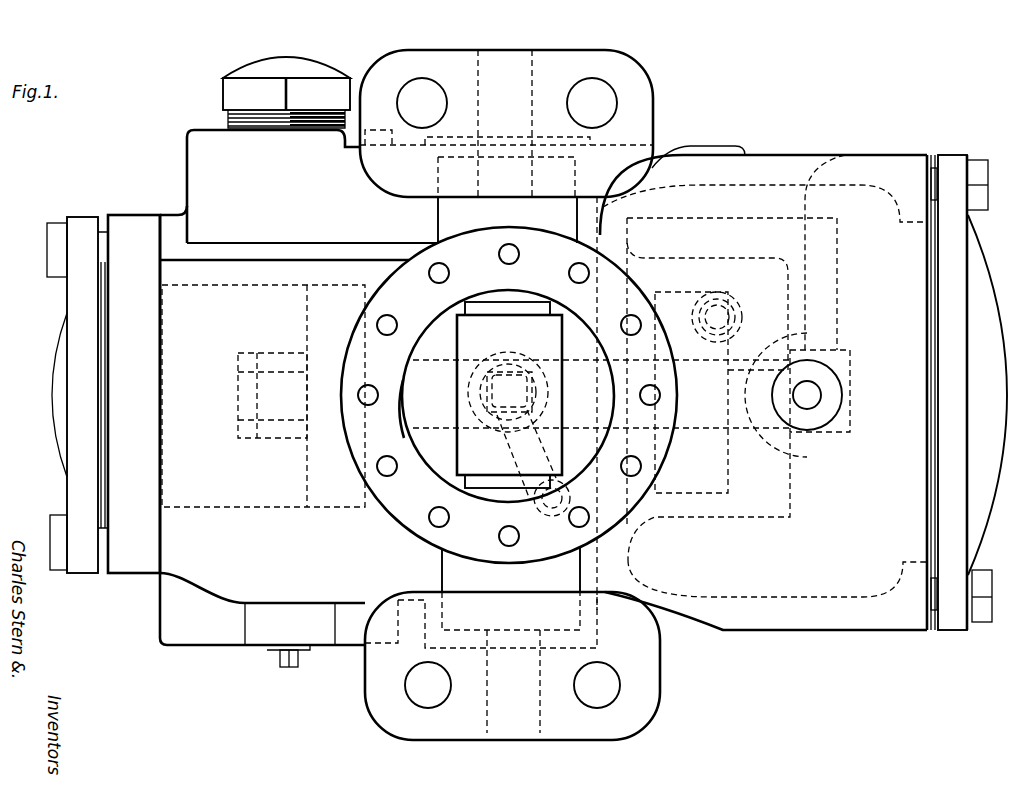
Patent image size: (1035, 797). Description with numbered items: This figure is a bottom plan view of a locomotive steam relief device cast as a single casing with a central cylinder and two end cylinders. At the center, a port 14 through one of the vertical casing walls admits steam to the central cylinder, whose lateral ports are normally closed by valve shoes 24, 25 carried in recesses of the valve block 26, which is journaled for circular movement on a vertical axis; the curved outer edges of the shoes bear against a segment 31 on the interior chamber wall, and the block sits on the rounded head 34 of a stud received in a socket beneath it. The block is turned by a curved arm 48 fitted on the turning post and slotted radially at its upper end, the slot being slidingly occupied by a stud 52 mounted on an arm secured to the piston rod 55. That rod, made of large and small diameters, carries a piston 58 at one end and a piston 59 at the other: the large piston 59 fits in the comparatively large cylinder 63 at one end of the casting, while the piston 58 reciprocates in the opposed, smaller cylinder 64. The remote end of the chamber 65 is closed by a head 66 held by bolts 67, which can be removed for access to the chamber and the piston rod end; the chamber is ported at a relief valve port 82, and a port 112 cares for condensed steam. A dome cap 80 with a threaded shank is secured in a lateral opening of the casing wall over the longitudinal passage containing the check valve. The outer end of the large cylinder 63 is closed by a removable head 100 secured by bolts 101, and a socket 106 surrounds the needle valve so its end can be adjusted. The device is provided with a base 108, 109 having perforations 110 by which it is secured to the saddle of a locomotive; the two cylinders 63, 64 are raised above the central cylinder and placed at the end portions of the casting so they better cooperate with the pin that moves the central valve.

The port 14 is at (565, 403).
The valve shoe 24 is at (493, 301).
The valve shoe 25 is at (500, 489).
The valve block 26 is at (509, 395).
The segment 31 is at (508, 396).
The rounded head 34 is at (427, 462).
The curved arm 48 is at (508, 463).
The stud 52 is at (545, 512).
The piston rod 55 is at (708, 428).
The piston 58 is at (782, 472).
The piston 59 is at (306, 463).
The cylinder 63 is at (299, 387).
The cylinder 64 is at (763, 519).
The chamber 65 is at (763, 392).
The head 66 is at (975, 540).
The bolts 67 is at (985, 591).
The dome cap 80 is at (266, 61).
The relief valve port 82 is at (722, 300).
The removable head 100 is at (76, 337).
The bolts 101 is at (35, 396).
The socket 106 is at (262, 636).
The base 108 is at (465, 738).
The base 109 is at (552, 133).
The perforations 110 is at (605, 99).
The port 112 is at (820, 395).